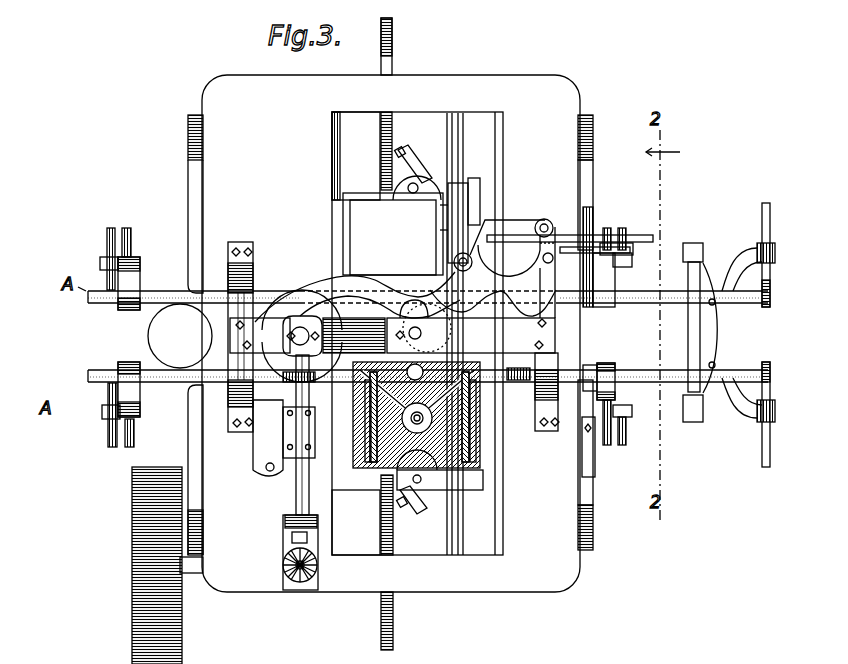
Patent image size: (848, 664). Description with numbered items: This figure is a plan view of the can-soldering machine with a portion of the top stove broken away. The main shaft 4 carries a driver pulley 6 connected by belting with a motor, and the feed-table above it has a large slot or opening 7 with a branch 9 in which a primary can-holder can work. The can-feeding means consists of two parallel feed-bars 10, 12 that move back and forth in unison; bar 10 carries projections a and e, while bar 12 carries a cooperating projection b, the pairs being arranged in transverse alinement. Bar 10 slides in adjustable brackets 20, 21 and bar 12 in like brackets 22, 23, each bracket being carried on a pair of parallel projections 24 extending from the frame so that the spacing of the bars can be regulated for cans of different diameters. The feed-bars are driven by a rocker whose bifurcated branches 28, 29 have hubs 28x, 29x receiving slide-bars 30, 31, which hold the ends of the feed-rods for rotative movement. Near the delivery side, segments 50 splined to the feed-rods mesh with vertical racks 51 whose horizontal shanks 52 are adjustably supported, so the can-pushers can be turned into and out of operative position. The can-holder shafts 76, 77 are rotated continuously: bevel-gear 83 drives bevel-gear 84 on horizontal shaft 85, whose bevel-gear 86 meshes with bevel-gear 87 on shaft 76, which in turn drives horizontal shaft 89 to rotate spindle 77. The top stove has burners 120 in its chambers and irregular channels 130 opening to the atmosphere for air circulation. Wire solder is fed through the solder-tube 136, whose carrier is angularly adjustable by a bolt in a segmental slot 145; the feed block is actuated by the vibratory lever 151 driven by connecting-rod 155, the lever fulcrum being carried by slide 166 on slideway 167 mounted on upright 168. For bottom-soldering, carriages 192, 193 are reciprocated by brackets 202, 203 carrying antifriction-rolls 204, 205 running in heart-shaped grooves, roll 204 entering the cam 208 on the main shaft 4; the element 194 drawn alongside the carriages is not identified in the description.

The main shaft 4 is at (192, 574).
The pulley 6 is at (140, 541).
The slot or opening 7 is at (500, 553).
The branch 9 is at (290, 300).
The feed-bar 10 is at (88, 376).
The feed-bar 12 is at (95, 303).
The adjustable bracket 20 is at (392, 58).
The adjustable bracket 21 is at (626, 418).
The adjustable bracket 22 is at (133, 284).
The adjustable bracket 23 is at (607, 268).
The parallel projections 24 is at (127, 230).
The branch of rocker 28 is at (740, 405).
The hub 28x is at (776, 410).
The branch of rocker 29 is at (722, 310).
The hub 29x is at (776, 253).
The slide-bar 30 is at (771, 442).
The slide-bar 31 is at (771, 226).
The segment 50 is at (590, 366).
The rack 51 is at (606, 368).
The horizontal shank 52 is at (584, 450).
The shaft 76 is at (302, 324).
The shaft or spindle 77 is at (421, 333).
The bevel-gear 83 is at (283, 565).
The bevel-gear 84 is at (290, 548).
The horizontal shaft 85 is at (296, 489).
The bevel-gear 86 is at (278, 392).
The bevel-gear 87 is at (260, 335).
The horizontal shaft 89 is at (360, 300).
The burner 120 is at (423, 418).
The irregular channel or passage 130 is at (468, 458).
The solder-tube 136 is at (443, 228).
The segmental slot 145 is at (457, 240).
The lever 151 is at (517, 235).
The connecting-rod 155 is at (544, 219).
The slide 166 is at (633, 238).
The slideway or offset 167 is at (585, 247).
The upright 168 is at (547, 263).
The carriage 192 is at (445, 545).
The carriage 193 is at (340, 193).
The guide rods 194 is at (462, 147).
The bracket 202 is at (425, 512).
The bracket 203 is at (408, 176).
The antifriction-roll 204 is at (409, 515).
The antifriction-roll 205 is at (400, 157).
The cam 208 is at (393, 636).
The projection a is at (254, 434).
The projection b is at (312, 310).
The projection e is at (522, 382).